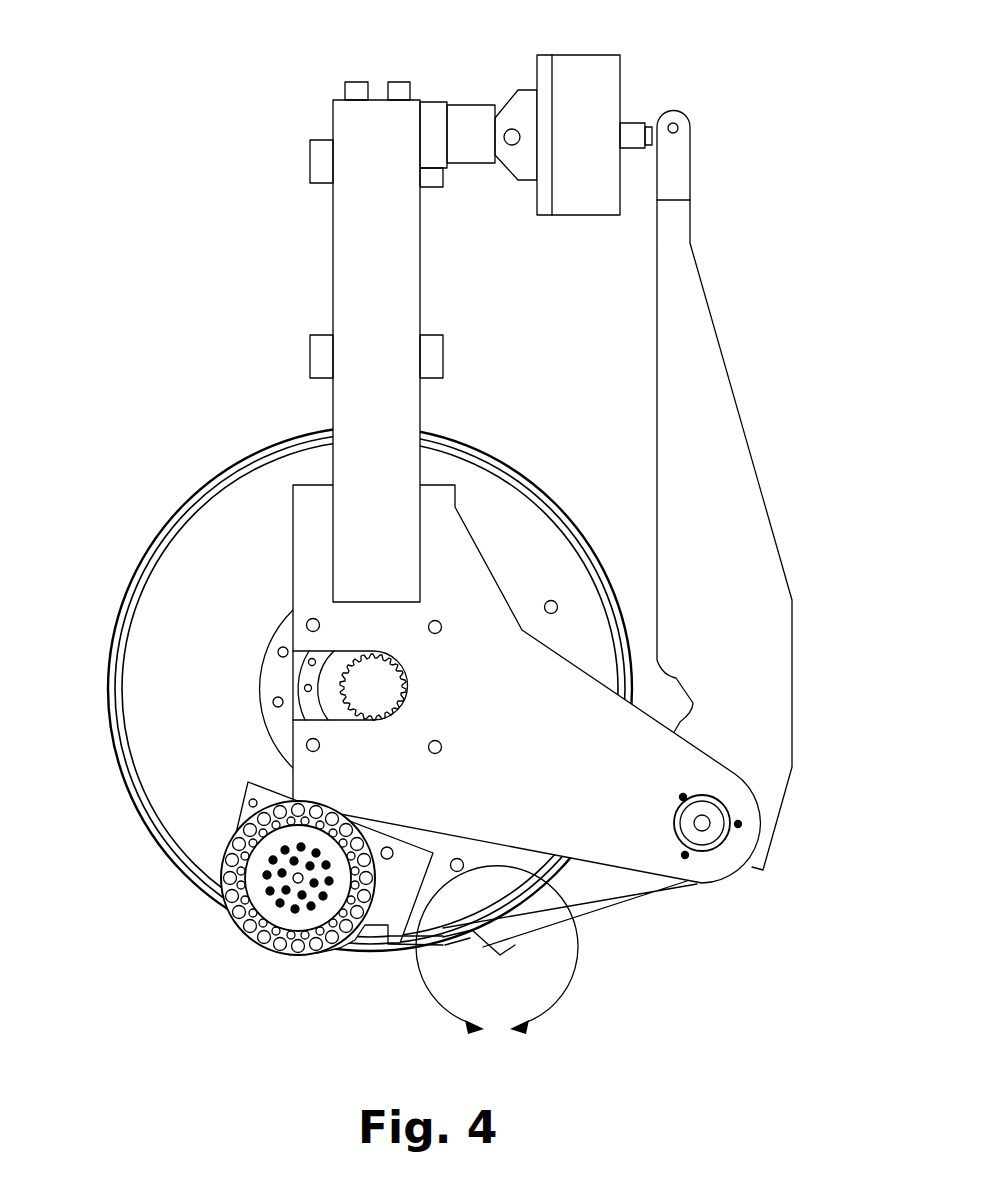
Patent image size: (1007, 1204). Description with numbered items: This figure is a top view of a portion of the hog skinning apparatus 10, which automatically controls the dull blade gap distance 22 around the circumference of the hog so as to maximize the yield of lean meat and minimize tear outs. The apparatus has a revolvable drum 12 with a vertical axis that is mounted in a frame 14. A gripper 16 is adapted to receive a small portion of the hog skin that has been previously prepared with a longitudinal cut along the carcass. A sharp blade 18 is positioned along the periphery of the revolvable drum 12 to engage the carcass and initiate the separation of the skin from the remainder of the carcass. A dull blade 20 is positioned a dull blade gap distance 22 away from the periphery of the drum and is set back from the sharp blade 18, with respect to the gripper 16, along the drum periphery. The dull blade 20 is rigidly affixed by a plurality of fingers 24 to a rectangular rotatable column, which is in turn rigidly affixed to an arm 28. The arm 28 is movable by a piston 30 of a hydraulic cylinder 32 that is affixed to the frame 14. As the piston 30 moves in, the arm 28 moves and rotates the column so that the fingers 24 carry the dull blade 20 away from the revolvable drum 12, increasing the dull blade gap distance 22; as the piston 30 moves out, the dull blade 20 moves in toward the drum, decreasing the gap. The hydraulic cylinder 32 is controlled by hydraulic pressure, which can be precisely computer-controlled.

The hog skinning apparatus 10 is at (103, 345).
The revolvable drum 12 is at (188, 497).
The frame 14 is at (333, 214).
The gripper 16 is at (243, 913).
The sharp blade 18 is at (352, 950).
The dull blade 20 is at (438, 947).
The dull blade gap distance 22 is at (443, 945).
The fingers 24 is at (612, 917).
The arm 28 is at (772, 590).
The piston 30 is at (633, 126).
The hydraulic cylinder 32 is at (580, 207).